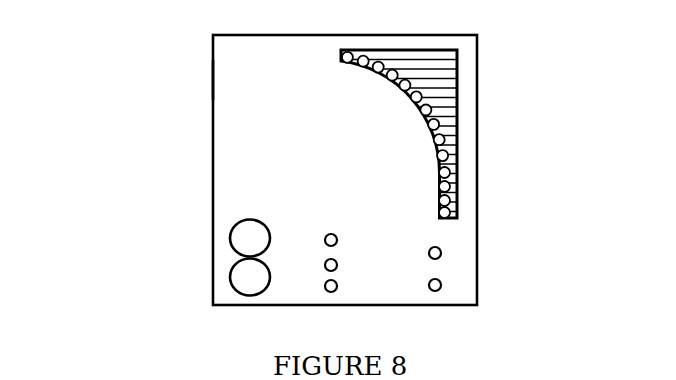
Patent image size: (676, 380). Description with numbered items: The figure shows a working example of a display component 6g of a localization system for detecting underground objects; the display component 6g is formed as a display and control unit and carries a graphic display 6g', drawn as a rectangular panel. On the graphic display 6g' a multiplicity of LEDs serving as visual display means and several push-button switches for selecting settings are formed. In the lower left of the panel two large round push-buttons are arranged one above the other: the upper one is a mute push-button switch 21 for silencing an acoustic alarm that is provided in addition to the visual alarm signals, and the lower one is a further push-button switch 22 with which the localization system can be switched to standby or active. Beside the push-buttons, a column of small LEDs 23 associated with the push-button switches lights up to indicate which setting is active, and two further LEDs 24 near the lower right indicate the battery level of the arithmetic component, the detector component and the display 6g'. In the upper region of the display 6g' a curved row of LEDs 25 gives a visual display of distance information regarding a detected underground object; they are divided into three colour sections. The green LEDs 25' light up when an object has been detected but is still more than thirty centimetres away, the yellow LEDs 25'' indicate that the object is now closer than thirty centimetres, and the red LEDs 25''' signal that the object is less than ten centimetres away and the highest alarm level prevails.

The display component 6g is at (253, 170).
The graphic display 6g' is at (168, 70).
The mute push-button switch 21 is at (243, 235).
The push-button switch 22 is at (241, 272).
The LEDs 23 is at (375, 252).
The LEDs 24 is at (475, 273).
The LEDs 25 is at (444, 134).
The green LEDs 25' is at (504, 192).
The yellow LEDs 25'' is at (502, 134).
The red LEDs 25''' is at (471, 80).